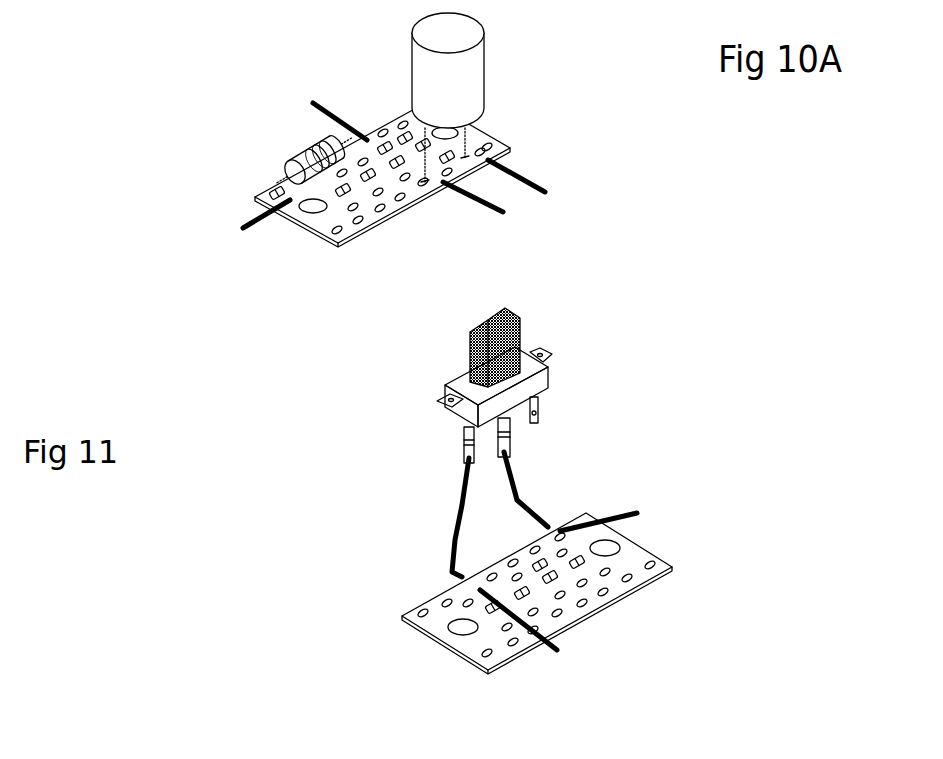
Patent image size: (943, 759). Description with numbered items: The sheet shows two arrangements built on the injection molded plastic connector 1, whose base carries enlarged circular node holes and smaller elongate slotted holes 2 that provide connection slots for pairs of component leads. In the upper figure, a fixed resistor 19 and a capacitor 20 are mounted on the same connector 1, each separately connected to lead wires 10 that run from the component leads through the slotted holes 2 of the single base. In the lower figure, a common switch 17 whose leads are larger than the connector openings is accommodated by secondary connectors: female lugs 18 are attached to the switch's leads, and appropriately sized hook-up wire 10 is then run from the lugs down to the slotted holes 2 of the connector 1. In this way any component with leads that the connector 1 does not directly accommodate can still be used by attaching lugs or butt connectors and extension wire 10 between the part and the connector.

In FIG. 10A, the connector 1 is at (327, 223).
In FIG. 10A, the elongate slotted holes 2 is at (480, 148).
In FIG. 11, the elongate slotted holes 2 is at (402, 617).
In FIG. 10A, the lead wires 10 is at (613, 153).
In FIG. 11, the lead wires 10 is at (448, 547).
In FIG. 11, the switch 17 is at (520, 332).
In FIG. 11, the female lugs 18 is at (462, 452).
In FIG. 10A, the fixed resistor 19 is at (320, 148).
In FIG. 10A, the capacitor 20 is at (468, 78).